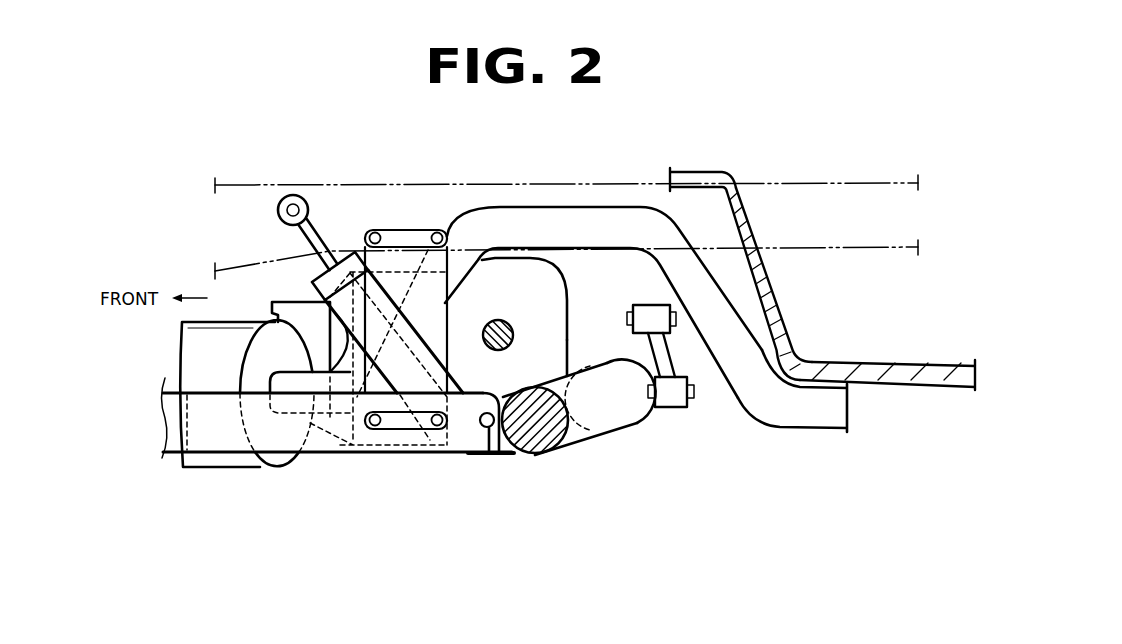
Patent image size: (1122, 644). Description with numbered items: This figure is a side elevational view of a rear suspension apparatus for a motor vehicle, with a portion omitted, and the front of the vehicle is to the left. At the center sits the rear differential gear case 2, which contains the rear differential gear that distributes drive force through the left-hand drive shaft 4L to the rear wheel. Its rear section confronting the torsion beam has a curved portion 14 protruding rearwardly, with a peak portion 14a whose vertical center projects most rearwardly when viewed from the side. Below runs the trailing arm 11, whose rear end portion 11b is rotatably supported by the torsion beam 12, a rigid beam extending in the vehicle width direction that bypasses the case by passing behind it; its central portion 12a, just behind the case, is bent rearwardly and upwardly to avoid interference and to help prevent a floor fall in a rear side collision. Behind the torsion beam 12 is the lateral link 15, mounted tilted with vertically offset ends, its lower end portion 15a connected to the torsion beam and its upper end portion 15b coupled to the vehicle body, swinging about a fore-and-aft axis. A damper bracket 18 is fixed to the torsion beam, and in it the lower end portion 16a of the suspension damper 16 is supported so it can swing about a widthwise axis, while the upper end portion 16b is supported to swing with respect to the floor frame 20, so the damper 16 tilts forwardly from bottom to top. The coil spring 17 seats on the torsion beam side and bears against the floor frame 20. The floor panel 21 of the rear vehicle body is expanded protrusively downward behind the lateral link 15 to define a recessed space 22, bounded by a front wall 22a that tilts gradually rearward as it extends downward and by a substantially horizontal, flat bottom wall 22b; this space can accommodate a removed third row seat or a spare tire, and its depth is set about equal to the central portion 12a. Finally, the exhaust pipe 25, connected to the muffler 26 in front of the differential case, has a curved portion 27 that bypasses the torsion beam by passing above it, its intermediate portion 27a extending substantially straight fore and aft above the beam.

The rear differential gear case 2 is at (278, 297).
The left-hand drive shaft 4L is at (509, 323).
The trailing arm 11 is at (319, 460).
The rear end portion of trailing arm 11b is at (486, 457).
The torsion beam 12 is at (579, 444).
The central portion of torsion beam 12a is at (637, 423).
The curved portion 14 is at (563, 300).
The peak portion 14a is at (566, 373).
The lateral link 15 is at (635, 340).
The lower end portion of lateral link 15a is at (681, 406).
The upper end portion of lateral link 15b is at (644, 305).
The suspension damper 16 is at (455, 369).
The lower end portion of damper 16a is at (455, 456).
The upper end portion of damper 16b is at (293, 195).
The suspension spring 17 is at (405, 222).
The damper bracket 18 is at (492, 430).
The floor frame 20 is at (877, 181).
The floor panel 21 is at (694, 171).
The recessed space 22 is at (887, 346).
The front wall 22a is at (772, 304).
The bottom wall 22b is at (862, 355).
The exhaust pipe 25 is at (814, 437).
The muffler 26 is at (230, 466).
The curved portion of exhaust pipe 27 is at (603, 264).
The intermediate portion 27a is at (591, 323).